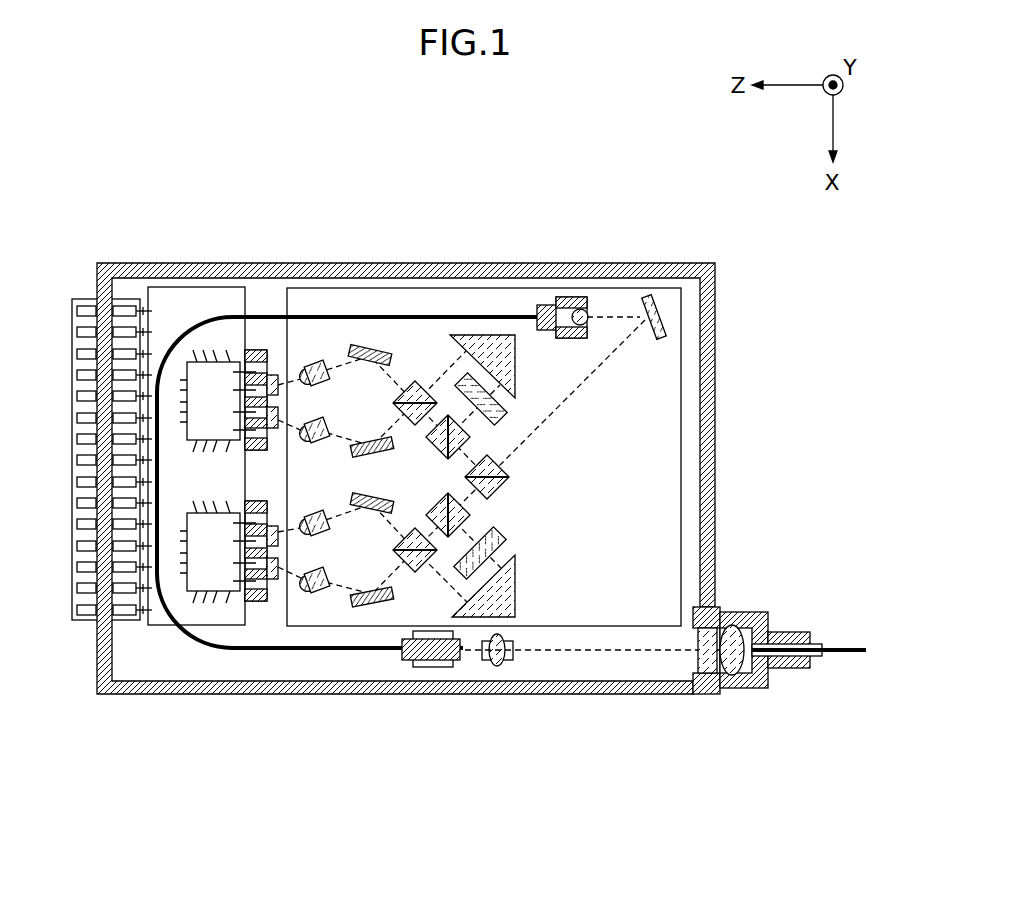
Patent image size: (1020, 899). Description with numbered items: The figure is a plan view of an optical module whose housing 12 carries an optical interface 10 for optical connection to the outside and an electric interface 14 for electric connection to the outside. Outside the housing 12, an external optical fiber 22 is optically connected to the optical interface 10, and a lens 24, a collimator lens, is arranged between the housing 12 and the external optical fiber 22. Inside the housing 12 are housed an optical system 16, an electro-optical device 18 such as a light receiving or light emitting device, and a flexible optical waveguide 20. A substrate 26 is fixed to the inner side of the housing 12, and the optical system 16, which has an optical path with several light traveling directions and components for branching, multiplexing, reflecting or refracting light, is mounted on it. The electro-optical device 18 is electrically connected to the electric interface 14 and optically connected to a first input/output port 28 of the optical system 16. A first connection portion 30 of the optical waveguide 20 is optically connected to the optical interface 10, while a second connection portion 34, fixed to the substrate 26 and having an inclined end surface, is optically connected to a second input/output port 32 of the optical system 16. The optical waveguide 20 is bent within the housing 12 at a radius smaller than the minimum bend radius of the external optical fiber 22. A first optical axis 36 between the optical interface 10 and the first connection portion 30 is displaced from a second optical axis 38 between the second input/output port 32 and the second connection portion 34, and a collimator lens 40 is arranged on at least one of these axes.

The optical interface 10 is at (727, 594).
The housing 12 is at (717, 442).
The electric interface 14 is at (85, 630).
The optical system 16 is at (521, 511).
The electro-optical device 18 is at (272, 577).
The optical waveguide 20 is at (367, 652).
The external optical fiber 22 is at (838, 654).
The lens 24 is at (733, 676).
The substrate 26 is at (660, 390).
The first input/output port 28 is at (295, 598).
The first connection portion 30 is at (462, 662).
The second input/output port 32 is at (632, 303).
The second connection portion 34 is at (548, 310).
The first optical axis 36 is at (590, 652).
The second optical axis 38 is at (607, 316).
The lens 40 is at (580, 309).